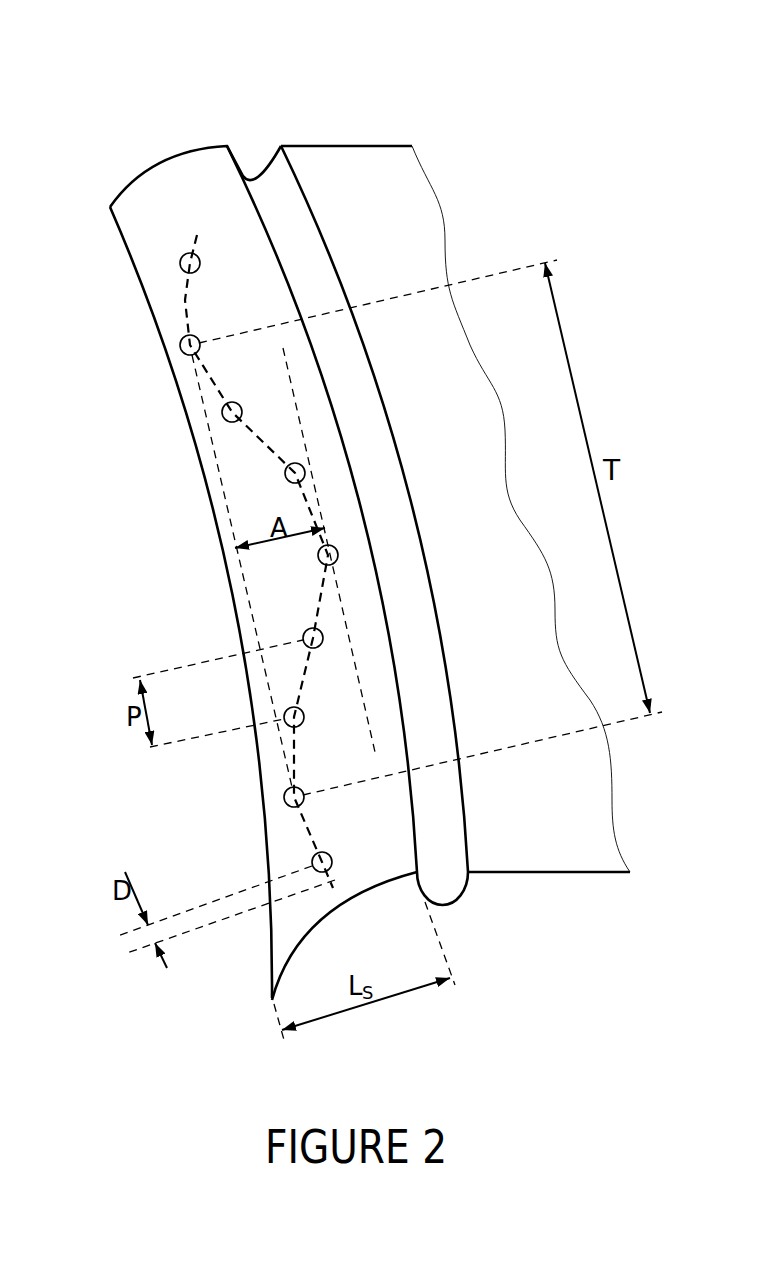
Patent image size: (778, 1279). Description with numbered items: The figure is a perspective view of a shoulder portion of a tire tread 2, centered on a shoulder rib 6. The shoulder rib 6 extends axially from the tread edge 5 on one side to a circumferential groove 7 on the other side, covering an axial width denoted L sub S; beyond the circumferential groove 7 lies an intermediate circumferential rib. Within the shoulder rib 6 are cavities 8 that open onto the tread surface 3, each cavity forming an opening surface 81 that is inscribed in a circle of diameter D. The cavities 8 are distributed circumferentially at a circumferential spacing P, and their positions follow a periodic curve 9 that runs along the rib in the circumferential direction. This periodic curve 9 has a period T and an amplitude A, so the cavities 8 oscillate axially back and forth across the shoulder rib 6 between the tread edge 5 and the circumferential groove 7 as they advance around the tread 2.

The tread 2 is at (348, 105).
The tread surface 3 is at (381, 173).
The tread edge 5 is at (125, 262).
The shoulder rib 6 is at (163, 195).
The circumferential groove 7 is at (440, 876).
The cavities 8 is at (285, 475).
The opening surface 81 is at (312, 857).
The periodic curve 9 is at (185, 307).